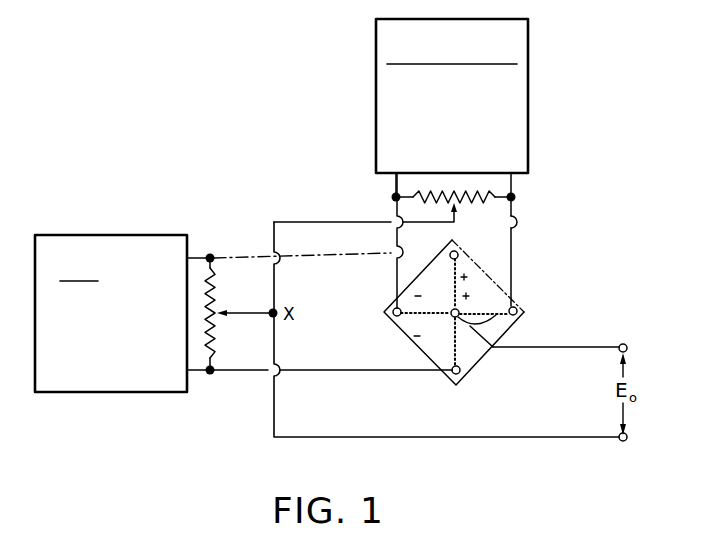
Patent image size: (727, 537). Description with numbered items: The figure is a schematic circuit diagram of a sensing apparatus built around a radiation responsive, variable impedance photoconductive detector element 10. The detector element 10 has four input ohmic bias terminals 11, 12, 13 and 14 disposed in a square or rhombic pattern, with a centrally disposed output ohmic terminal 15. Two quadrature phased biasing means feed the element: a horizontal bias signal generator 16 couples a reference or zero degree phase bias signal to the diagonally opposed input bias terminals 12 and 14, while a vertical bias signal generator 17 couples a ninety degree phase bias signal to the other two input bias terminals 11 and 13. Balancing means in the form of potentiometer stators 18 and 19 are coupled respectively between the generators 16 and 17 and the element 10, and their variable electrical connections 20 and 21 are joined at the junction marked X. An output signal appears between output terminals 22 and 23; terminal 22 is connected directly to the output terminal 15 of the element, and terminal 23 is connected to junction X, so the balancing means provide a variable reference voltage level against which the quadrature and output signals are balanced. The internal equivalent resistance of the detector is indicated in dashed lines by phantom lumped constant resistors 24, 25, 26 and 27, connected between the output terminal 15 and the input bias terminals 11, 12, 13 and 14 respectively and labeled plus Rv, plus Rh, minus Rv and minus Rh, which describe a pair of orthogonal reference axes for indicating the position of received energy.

The photoconductive detector element 10 is at (453, 241).
The input ohmic bias terminal 11 is at (450, 250).
The input ohmic bias terminal 12 is at (524, 311).
The input ohmic bias terminal 13 is at (464, 378).
The input ohmic bias terminal 14 is at (390, 309).
The output ohmic terminal 15 is at (494, 313).
The horizontal bias signal generator 16 is at (523, 70).
The vertical bias signal generator 17 is at (147, 235).
The potentiometer stator 18 is at (497, 193).
The potentiometer stator 19 is at (228, 266).
The variable electrical connection 20 is at (458, 211).
The variable electrical connection 21 is at (229, 310).
The output terminal 22 is at (628, 345).
The output terminal 23 is at (627, 437).
The phantom lumped constant resistor 24 is at (452, 284).
The phantom lumped constant resistor 25 is at (527, 295).
The phantom lumped constant resistor 26 is at (465, 348).
The phantom lumped constant resistor 27 is at (422, 318).